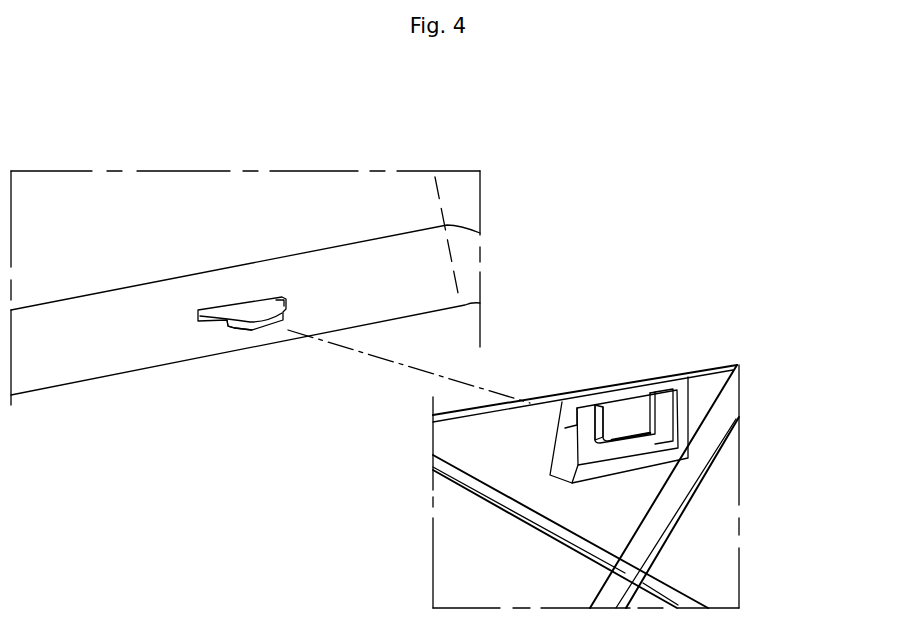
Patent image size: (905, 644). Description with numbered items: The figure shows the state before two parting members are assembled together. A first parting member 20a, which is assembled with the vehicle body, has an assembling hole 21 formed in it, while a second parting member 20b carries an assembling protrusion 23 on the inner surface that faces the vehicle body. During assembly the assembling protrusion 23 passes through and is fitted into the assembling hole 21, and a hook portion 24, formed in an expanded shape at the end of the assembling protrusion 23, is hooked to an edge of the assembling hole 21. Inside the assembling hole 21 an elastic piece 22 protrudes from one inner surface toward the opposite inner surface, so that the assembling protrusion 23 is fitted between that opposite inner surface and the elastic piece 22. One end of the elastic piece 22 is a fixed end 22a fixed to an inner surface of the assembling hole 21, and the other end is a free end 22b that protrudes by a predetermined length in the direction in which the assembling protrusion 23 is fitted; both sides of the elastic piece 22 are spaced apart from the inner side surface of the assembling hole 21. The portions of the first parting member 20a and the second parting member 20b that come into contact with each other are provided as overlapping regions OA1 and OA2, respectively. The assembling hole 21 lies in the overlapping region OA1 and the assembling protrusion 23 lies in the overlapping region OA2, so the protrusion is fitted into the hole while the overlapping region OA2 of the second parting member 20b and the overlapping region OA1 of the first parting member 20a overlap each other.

The first parting member 20a is at (713, 568).
The second parting member 20b is at (192, 210).
The assembling hole 21 is at (655, 410).
The elastic piece 22 is at (709, 386).
The fixed end 22a is at (612, 400).
The free end 22b is at (653, 433).
The assembling protrusion 23 is at (222, 319).
The hook portion 24 is at (242, 330).
The overlapping region OA1 is at (530, 458).
The overlapping region OA2 is at (416, 292).